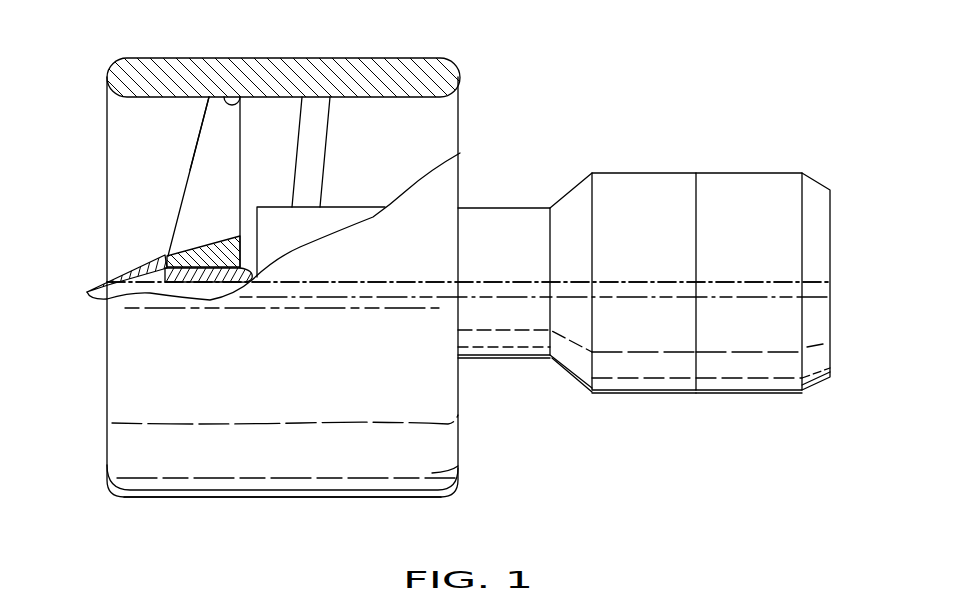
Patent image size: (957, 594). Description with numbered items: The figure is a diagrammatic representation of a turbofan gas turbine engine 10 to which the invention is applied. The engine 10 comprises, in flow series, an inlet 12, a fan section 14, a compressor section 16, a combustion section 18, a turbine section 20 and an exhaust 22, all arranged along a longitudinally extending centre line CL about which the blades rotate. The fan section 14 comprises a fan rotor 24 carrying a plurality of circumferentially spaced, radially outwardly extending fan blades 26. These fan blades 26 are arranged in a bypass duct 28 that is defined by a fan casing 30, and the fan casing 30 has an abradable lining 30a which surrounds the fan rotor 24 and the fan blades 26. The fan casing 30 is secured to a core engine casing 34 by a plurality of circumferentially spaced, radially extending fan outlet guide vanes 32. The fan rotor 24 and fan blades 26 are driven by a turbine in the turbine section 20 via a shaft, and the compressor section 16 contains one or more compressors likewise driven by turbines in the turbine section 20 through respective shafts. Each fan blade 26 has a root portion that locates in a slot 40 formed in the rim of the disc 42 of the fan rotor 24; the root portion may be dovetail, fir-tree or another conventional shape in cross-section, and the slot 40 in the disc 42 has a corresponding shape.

The turbofan gas turbine engine 10 is at (547, 112).
The inlet 12 is at (107, 168).
The fan section 14 is at (270, 493).
The compressor section 16 is at (505, 340).
The combustion section 18 is at (647, 370).
The turbine section 20 is at (750, 370).
The exhaust 22 is at (823, 352).
The centre line CL is at (818, 282).
The fan rotor 24 is at (183, 245).
The fan blades 26 is at (210, 158).
The bypass duct 28 is at (281, 140).
The fan casing 30 is at (323, 72).
The abradable lining 30a is at (242, 99).
The fan outlet guide vanes 32 is at (322, 120).
The core engine casing 34 is at (353, 206).
The slot 40 is at (222, 273).
The disc 42 is at (180, 250).